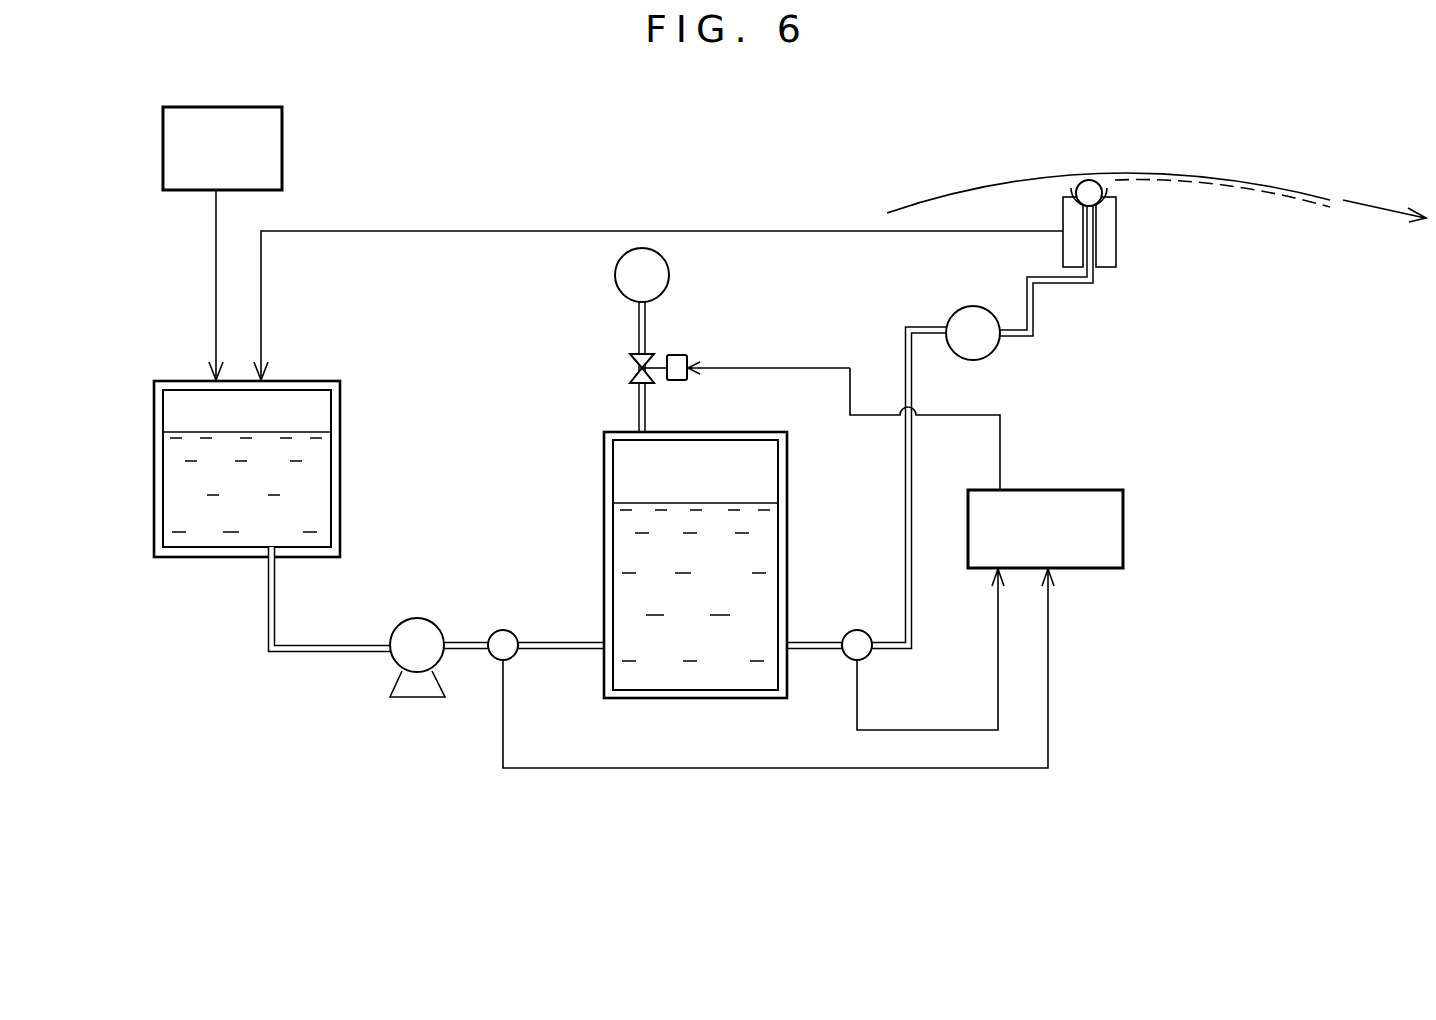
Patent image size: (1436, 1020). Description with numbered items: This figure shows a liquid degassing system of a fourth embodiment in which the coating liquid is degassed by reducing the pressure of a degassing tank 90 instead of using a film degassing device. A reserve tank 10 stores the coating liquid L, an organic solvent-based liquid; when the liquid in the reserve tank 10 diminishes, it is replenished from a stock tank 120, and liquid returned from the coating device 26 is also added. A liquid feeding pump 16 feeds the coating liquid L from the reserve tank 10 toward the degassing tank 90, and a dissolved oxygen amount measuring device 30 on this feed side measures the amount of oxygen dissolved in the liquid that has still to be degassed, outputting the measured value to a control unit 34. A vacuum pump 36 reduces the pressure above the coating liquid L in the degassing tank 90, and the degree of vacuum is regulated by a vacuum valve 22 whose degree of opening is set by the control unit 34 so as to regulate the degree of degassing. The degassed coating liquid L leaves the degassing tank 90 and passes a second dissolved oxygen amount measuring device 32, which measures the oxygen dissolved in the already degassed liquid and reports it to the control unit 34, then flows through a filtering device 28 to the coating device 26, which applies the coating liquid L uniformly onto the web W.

The stock tank 120 is at (282, 131).
The reserve tank 10 is at (340, 415).
The liquid feeding pump 16 is at (423, 617).
The dissolved oxygen amount measuring device 30 is at (512, 630).
The degassing tank 90 is at (788, 495).
The coating liquid L is at (622, 525).
The vacuum pump 36 is at (669, 278).
The vacuum valve 22 is at (687, 355).
The dissolved oxygen amount measuring device 32 is at (855, 628).
The control unit 34 is at (1043, 490).
The filtering device 28 is at (975, 307).
The coating device 26 is at (1122, 235).
The web W is at (950, 195).